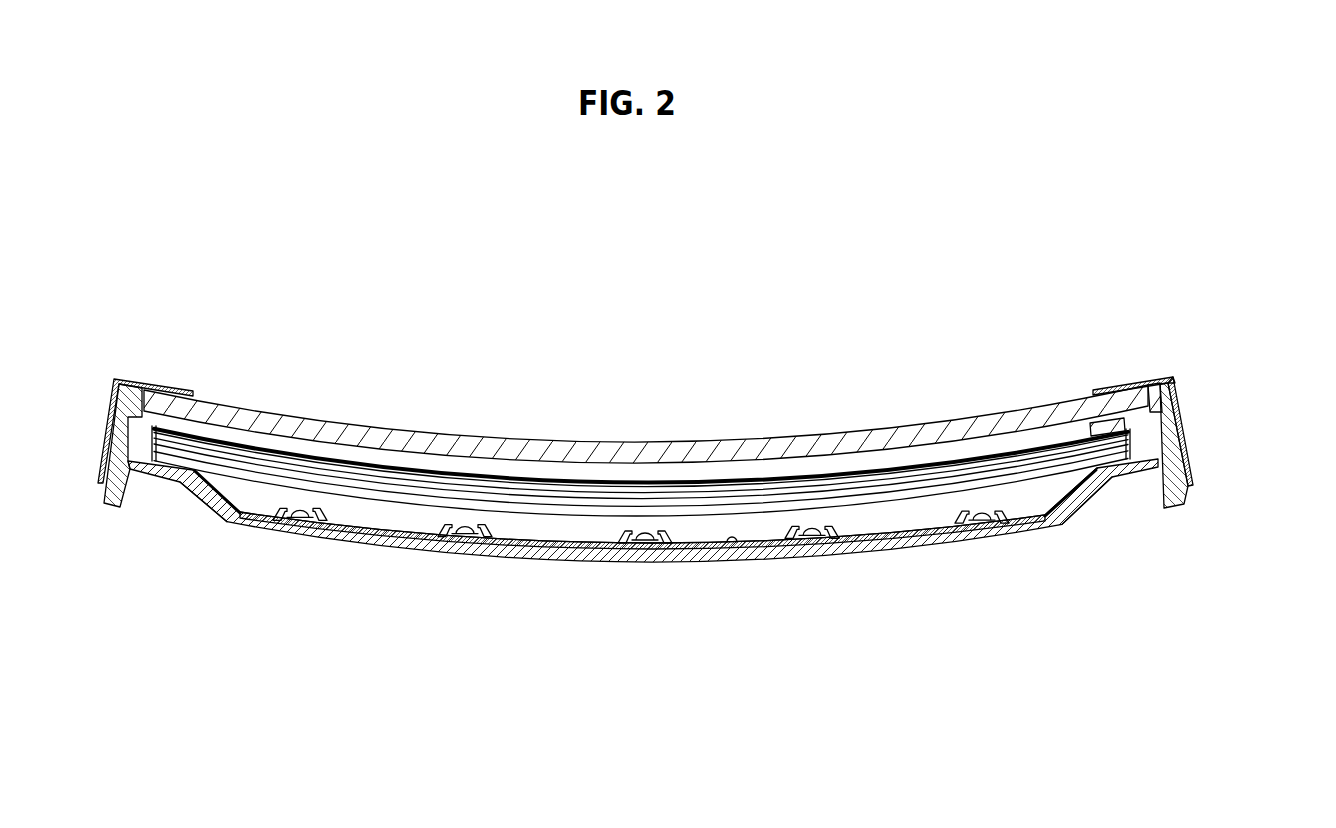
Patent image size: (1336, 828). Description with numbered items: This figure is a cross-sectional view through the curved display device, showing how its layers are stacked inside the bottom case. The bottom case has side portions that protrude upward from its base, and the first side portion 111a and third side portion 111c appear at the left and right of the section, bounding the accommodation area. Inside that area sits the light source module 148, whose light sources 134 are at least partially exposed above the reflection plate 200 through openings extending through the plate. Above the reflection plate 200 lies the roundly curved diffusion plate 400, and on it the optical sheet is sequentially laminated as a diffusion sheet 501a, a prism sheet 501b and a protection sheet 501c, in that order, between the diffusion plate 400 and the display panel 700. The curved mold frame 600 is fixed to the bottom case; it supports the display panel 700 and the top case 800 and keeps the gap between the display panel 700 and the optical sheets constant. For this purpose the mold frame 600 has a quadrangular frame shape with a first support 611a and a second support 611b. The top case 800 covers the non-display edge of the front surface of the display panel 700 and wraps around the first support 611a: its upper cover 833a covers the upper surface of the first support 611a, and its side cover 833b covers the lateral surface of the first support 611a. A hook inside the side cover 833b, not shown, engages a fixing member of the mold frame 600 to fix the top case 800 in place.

The first side portion 111a is at (193, 493).
The third side portion 111c is at (1078, 494).
The light sources 134 is at (292, 523).
The light source module 148 is at (565, 565).
The reflection plate 200 is at (740, 560).
The diffusion plate 400 is at (252, 475).
The diffusion sheet 501a is at (333, 480).
The prism sheet 501b is at (393, 483).
The protection sheet 501c is at (455, 487).
The mold frame 600 is at (1115, 359).
The first support 611a is at (1155, 400).
The second support 611b is at (1103, 427).
The display panel 700 is at (652, 455).
The top case 800 is at (1202, 437).
The upper cover 833a is at (1150, 384).
The side cover 833b is at (1260, 370).